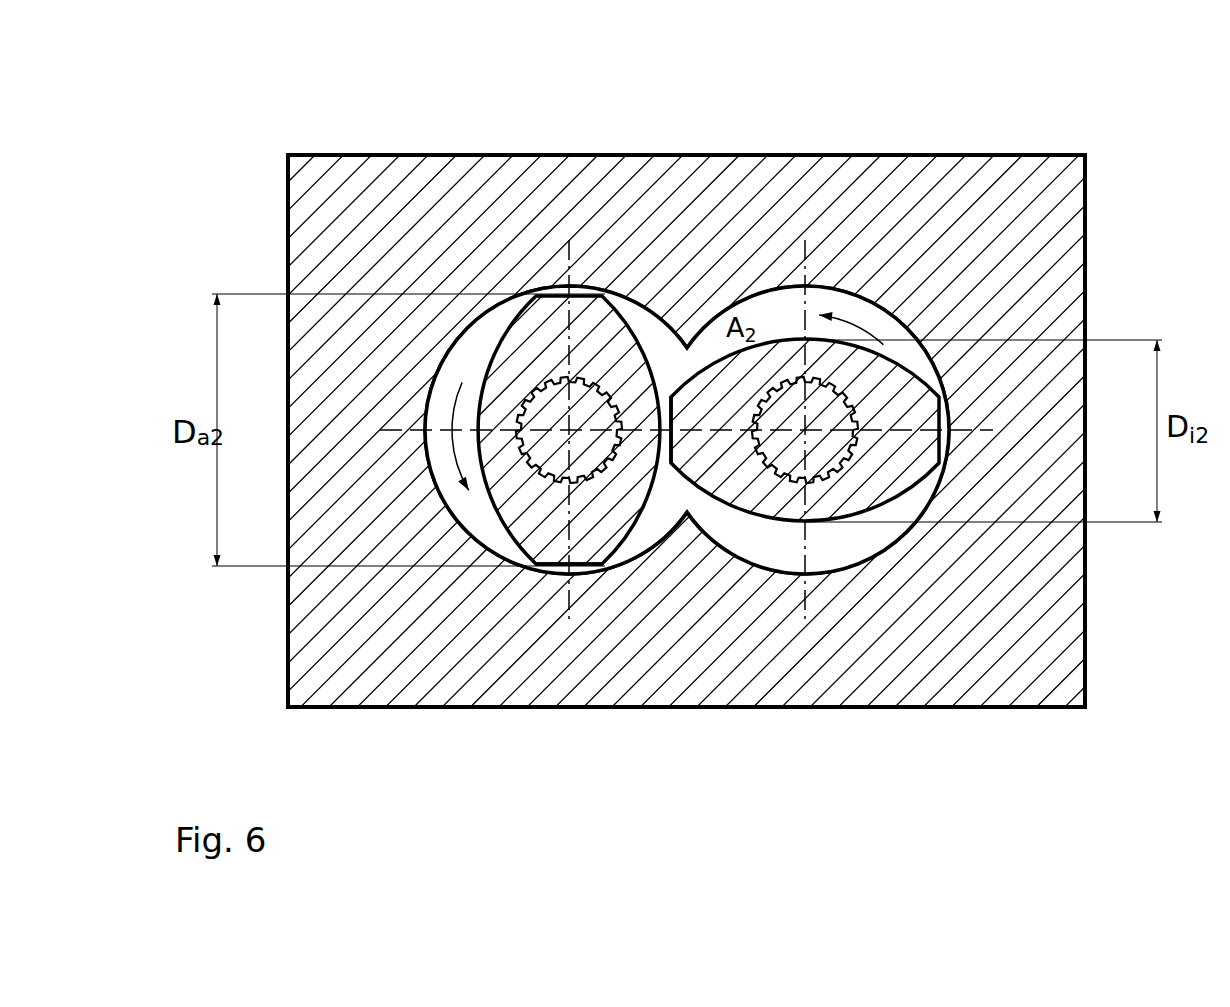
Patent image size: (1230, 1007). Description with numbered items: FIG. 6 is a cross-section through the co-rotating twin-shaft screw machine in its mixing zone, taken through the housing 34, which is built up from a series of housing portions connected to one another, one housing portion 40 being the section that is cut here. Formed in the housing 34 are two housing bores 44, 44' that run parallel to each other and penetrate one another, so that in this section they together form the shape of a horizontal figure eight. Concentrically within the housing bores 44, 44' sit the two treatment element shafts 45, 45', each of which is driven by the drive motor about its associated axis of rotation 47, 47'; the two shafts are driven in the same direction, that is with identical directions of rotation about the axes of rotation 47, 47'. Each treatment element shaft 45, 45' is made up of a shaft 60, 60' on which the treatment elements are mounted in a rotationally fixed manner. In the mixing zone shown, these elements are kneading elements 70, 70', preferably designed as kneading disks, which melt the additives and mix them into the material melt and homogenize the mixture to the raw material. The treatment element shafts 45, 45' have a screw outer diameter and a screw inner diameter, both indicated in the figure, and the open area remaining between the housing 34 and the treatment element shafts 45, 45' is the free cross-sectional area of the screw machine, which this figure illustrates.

The housing 34 is at (660, 118).
The housing portion 40 is at (412, 163).
The housing bore 44 is at (569, 317).
The housing bore 44' is at (805, 317).
The treatment element shaft 45 is at (477, 598).
The treatment element shaft 45' is at (847, 563).
The axis of rotation 47 is at (615, 503).
The axis of rotation 47' is at (615, 503).
The shaft 60 is at (569, 596).
The shaft 60' is at (862, 596).
The kneading element 70 is at (607, 683).
The kneading element 70' is at (736, 606).